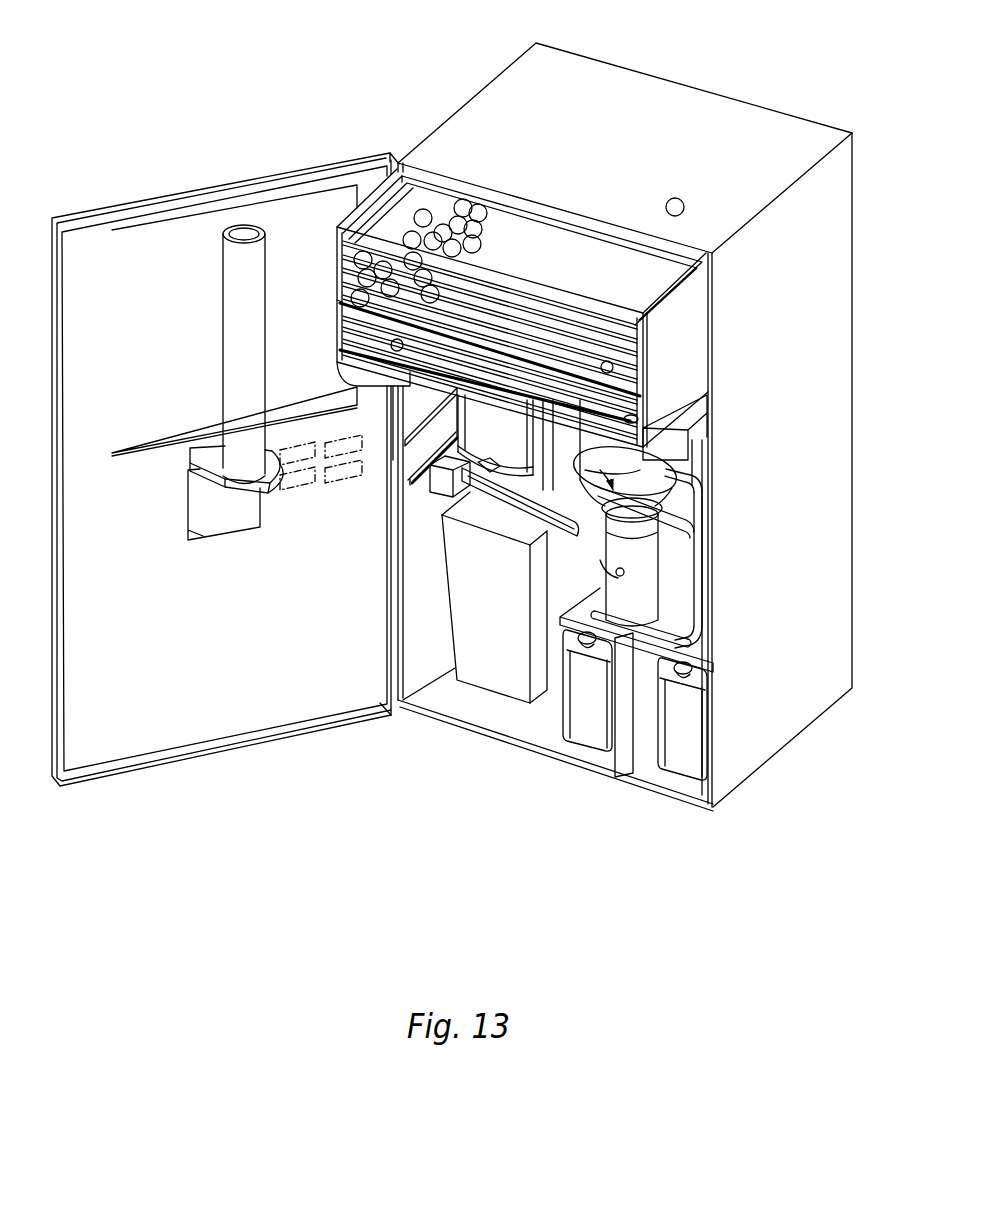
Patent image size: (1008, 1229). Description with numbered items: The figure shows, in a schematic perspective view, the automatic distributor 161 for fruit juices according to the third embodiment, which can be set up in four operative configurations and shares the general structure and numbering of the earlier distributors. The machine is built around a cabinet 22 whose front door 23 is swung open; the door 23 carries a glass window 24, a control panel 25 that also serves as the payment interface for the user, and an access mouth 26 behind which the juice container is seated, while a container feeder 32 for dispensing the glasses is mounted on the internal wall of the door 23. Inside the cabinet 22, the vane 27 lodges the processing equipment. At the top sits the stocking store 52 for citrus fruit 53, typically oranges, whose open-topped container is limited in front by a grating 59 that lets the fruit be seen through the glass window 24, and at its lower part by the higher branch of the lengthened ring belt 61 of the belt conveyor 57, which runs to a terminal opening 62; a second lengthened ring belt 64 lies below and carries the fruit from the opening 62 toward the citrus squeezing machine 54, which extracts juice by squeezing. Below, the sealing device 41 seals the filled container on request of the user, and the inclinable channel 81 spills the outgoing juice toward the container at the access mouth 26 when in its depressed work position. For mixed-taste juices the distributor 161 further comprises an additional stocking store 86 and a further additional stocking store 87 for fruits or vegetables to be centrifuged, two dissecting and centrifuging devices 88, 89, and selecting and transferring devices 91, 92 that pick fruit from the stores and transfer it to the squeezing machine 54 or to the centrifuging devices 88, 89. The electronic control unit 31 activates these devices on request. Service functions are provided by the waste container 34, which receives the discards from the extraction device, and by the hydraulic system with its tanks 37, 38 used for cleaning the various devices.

The automatic distributor 161 is at (326, 81).
The cabinet 22 is at (667, 78).
The front door 23 is at (148, 200).
The glass window 24 is at (110, 372).
The control panel 25 is at (304, 500).
The access mouth 26 is at (202, 537).
The vane 27 is at (402, 591).
The electronic control unit 31 is at (704, 402).
The container feeder 32 is at (198, 311).
The waste container 34 is at (460, 676).
The tank 37 is at (693, 713).
The tank 38 is at (580, 722).
The sealing device 41 is at (530, 453).
The stocking store 52 is at (520, 232).
The citrus fruit 53 is at (438, 210).
The citrus squeezing machine 54 is at (426, 445).
The belt conveyor 57 is at (317, 318).
The grating 59 is at (542, 331).
The lengthened ring belt 61 is at (598, 253).
The terminal opening 62 is at (630, 360).
The second lengthened ring belt 64 is at (633, 398).
The channel 81 is at (506, 512).
The additional stocking store 86 is at (668, 462).
The additional stocking store 87 is at (813, 414).
The dissecting and centrifuging device 88 is at (622, 587).
The dissecting and centrifuging device 89 is at (824, 546).
The selecting and transferring device 91 is at (564, 442).
The selecting and transferring device 92 is at (822, 479).